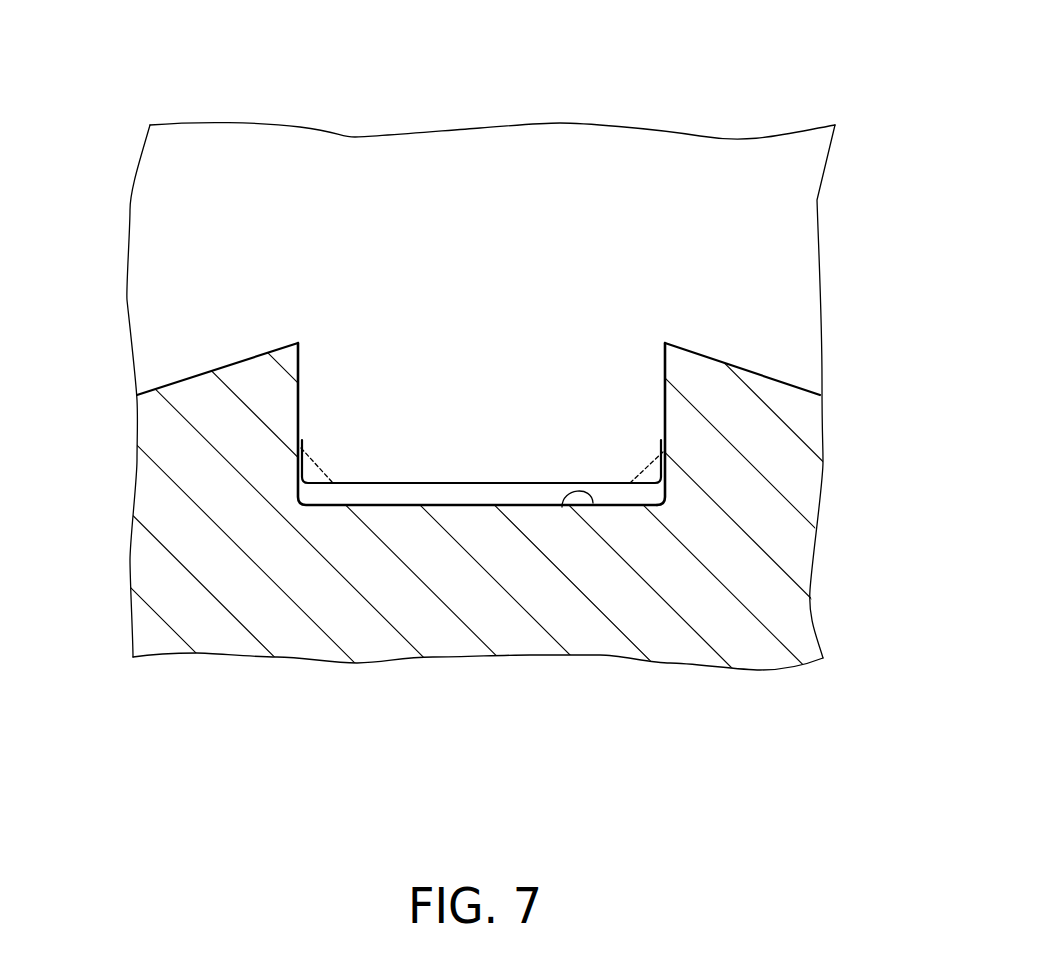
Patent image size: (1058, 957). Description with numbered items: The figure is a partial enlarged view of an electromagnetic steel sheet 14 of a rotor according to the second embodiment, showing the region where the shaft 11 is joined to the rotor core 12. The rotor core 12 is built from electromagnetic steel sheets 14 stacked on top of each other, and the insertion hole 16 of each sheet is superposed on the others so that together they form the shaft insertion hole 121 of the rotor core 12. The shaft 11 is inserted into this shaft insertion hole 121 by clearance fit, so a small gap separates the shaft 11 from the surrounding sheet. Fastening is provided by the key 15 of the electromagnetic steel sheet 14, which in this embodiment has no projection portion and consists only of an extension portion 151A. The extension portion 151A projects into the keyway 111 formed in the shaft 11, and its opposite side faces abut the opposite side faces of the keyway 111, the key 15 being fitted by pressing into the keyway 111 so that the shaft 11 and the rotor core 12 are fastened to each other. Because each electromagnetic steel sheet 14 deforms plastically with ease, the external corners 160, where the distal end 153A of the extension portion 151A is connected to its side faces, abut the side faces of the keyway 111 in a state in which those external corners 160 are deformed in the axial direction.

The shaft 11 is at (733, 643).
The rotor core 12 is at (663, 121).
The electromagnetic steel sheet 14 is at (720, 173).
The key 15 is at (672, 412).
The insertion hole 16 is at (183, 374).
The shaft insertion hole 121 is at (742, 369).
The external corner 160 is at (315, 473).
The extension portion 151A is at (408, 412).
The distal end 153A is at (490, 466).
The keyway 111 is at (593, 503).